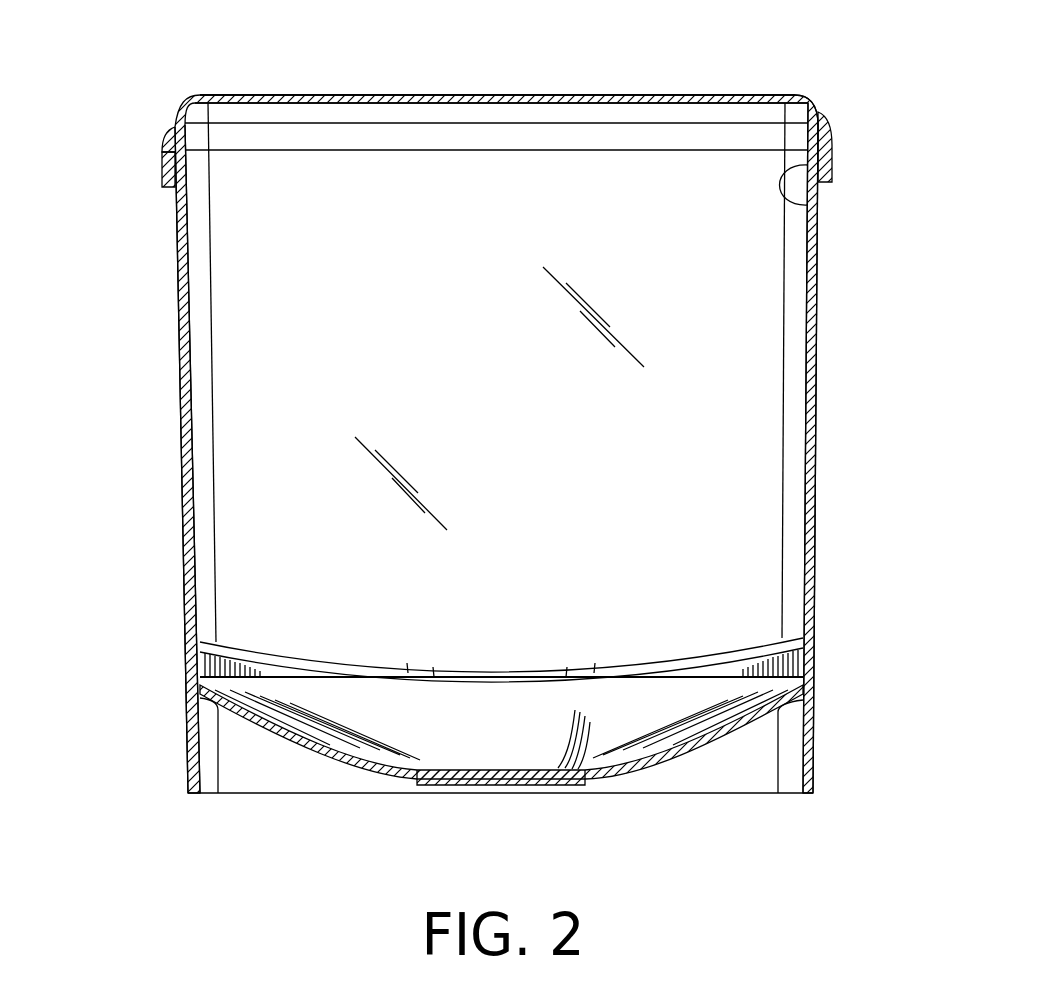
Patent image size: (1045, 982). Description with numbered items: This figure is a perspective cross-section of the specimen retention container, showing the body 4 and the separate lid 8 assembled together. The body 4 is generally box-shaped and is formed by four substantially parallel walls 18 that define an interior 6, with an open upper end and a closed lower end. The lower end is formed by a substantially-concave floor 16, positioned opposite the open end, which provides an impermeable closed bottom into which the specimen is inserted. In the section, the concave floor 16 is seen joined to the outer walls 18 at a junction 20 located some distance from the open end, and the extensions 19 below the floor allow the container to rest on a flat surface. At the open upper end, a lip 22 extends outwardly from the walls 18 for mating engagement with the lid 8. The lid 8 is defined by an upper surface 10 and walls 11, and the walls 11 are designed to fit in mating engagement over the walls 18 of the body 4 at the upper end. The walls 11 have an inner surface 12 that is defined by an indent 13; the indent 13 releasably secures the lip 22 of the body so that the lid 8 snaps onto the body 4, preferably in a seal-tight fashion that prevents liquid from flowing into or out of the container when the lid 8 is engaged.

The body 4 is at (843, 352).
The interior 6 is at (763, 535).
The lid 8 is at (677, 93).
The upper surface 10 is at (257, 95).
The walls 11 is at (162, 175).
The inner surface 12 is at (820, 198).
The indent 13 is at (160, 152).
The substantially-concave floor 16 is at (683, 753).
The walls 18 is at (182, 443).
The extensions 19 is at (188, 768).
The junction 20 is at (190, 698).
The lip 22 is at (828, 170).